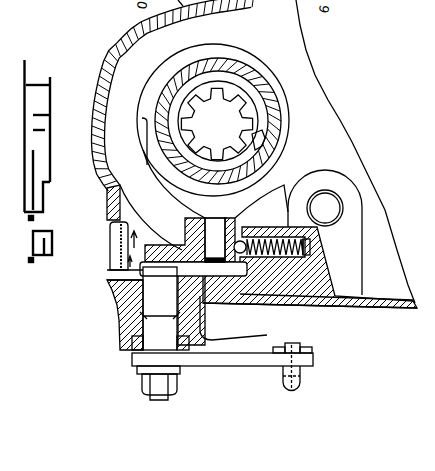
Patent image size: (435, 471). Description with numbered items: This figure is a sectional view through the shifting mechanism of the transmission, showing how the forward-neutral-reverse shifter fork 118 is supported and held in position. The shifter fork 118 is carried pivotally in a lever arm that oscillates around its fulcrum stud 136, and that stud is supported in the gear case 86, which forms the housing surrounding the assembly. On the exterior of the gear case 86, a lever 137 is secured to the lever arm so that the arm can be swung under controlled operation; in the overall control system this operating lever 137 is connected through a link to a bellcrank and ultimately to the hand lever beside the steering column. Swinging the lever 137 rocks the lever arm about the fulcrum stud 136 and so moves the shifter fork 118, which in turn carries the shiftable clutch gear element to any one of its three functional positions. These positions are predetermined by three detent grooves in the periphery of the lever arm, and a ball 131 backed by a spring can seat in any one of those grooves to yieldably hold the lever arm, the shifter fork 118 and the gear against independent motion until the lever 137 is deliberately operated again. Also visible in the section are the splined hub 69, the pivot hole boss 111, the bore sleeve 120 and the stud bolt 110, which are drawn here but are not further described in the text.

The gear case 86 is at (114, 62).
The shifter fork 118 is at (297, 118).
The splined hub 69 is at (213, 120).
The pivot hole boss 111 is at (353, 245).
The bore sleeve 120 is at (142, 221).
The fulcrum stud 136 is at (142, 281).
The lever 137 is at (253, 355).
The ball 131 is at (280, 296).
The stud bolt 110 is at (300, 379).